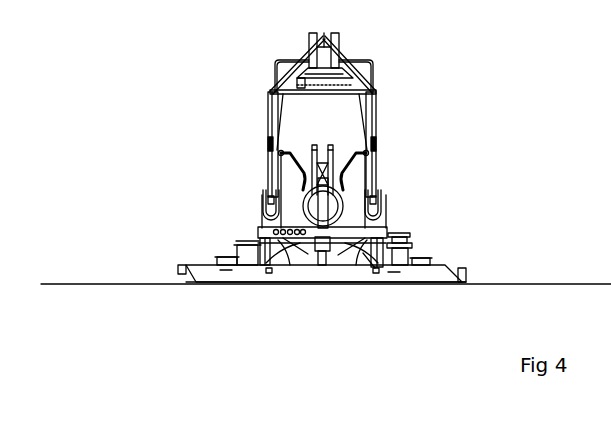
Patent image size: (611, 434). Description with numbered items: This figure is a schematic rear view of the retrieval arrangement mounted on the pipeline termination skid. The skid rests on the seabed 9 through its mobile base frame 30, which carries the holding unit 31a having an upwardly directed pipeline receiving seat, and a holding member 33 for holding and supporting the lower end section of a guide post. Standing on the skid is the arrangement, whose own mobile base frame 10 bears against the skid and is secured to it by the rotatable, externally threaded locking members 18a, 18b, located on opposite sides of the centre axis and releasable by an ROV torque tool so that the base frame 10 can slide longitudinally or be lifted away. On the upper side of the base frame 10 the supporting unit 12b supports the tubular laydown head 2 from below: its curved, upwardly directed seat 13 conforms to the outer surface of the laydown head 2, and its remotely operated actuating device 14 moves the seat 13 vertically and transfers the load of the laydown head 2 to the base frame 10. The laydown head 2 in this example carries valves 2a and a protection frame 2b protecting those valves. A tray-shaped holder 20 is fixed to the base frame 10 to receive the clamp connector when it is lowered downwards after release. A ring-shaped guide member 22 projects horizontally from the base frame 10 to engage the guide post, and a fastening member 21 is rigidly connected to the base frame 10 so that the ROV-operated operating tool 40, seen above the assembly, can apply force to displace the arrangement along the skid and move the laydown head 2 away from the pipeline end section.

The laydown head 2 is at (318, 206).
The valves 2a is at (316, 183).
The protection frame 2b is at (349, 160).
The seabed 9 is at (563, 284).
The base frame 10 is at (333, 265).
The supporting unit 12b is at (310, 252).
The seat 13 is at (338, 210).
The actuating device 14 is at (330, 245).
The locking member 18a is at (373, 268).
The locking member 18b is at (270, 270).
The holder 20 is at (297, 252).
The fastening member 21 is at (265, 212).
The guide member 22 is at (410, 245).
The base frame 30 is at (440, 280).
The holding unit 31a is at (290, 151).
The holding member 33 is at (402, 267).
The operating tool 40 is at (392, 72).